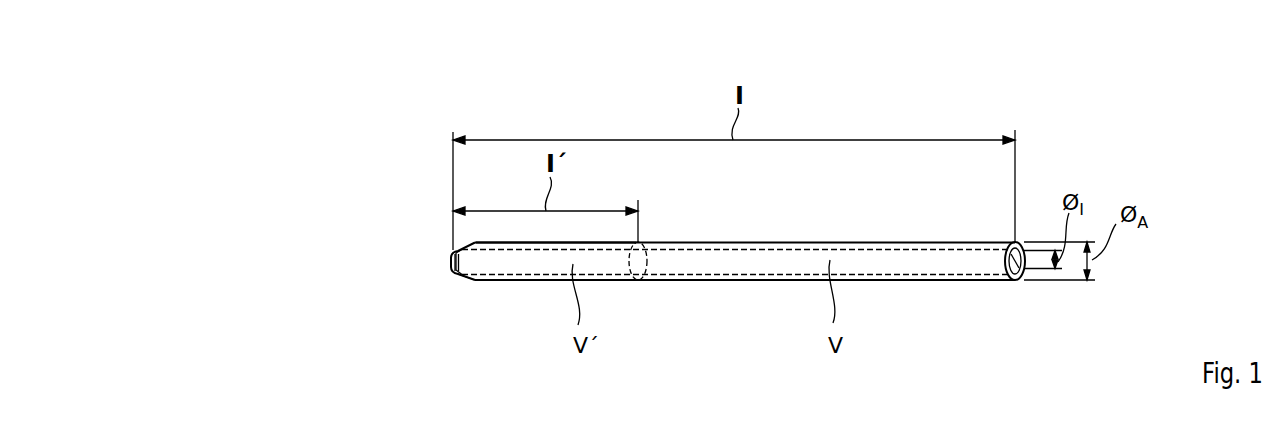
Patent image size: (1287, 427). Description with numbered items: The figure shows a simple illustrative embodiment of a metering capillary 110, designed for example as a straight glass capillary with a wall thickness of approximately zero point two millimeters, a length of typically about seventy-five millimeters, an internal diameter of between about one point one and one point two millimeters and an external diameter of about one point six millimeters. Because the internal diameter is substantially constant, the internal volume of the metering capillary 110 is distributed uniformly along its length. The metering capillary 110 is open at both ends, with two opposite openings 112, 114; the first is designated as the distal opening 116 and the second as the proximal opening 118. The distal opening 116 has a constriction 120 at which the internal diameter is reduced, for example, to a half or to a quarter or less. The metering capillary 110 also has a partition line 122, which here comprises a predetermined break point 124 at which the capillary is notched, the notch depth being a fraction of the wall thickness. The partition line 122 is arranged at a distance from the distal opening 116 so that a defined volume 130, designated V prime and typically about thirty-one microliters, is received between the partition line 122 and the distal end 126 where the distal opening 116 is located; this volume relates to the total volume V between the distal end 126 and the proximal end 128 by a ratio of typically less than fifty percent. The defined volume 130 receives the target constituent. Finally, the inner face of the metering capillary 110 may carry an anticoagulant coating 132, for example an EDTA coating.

The metering capillary 110 is at (1032, 144).
The first opening 112 is at (1029, 302).
The proximal opening 118 is at (1021, 283).
The second opening 114 is at (403, 233).
The distal opening 116 is at (450, 251).
The constriction 120 is at (455, 285).
The partition line 122 is at (670, 300).
The predetermined break point 124 is at (636, 282).
The distal end 126 is at (438, 258).
The proximal end 128 is at (1047, 289).
The defined volume 130 is at (528, 264).
The anticoagulant coating 132 is at (908, 272).